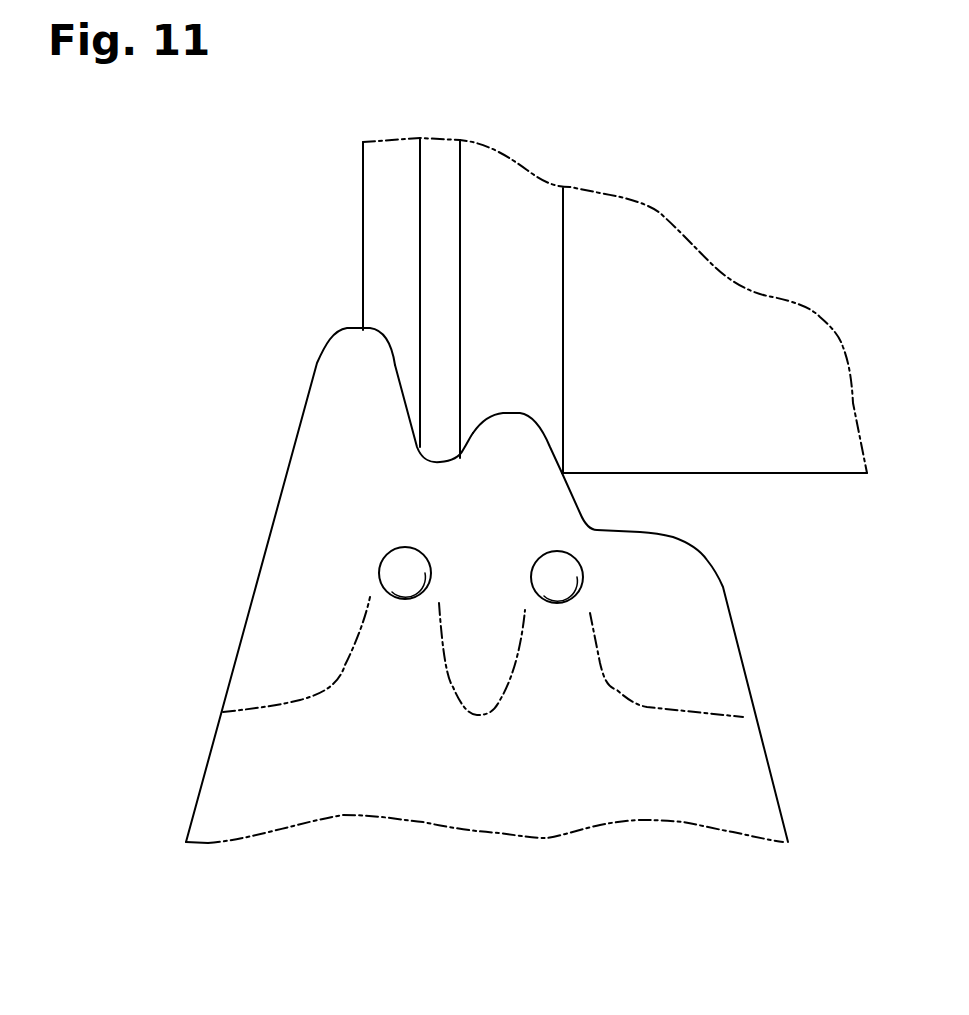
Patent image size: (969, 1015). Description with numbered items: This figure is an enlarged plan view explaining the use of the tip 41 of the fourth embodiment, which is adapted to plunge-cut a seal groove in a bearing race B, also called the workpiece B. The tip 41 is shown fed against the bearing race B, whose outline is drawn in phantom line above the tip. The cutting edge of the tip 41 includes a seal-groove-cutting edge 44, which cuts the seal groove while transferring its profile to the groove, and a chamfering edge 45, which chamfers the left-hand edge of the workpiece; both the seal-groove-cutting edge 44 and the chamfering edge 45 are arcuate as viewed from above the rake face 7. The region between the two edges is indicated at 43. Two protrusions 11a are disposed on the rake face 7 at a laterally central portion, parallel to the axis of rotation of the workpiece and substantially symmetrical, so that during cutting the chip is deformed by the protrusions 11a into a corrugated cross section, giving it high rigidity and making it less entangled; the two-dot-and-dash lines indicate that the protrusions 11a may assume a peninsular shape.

The bearing race B is at (363, 233).
The tip 41 is at (449, 552).
The groove 43 is at (425, 333).
The seal-groove-cutting edge 44 is at (563, 378).
The chamfering edge 45 is at (355, 328).
The protrusions 11a is at (392, 550).
The rake face 7 is at (716, 783).